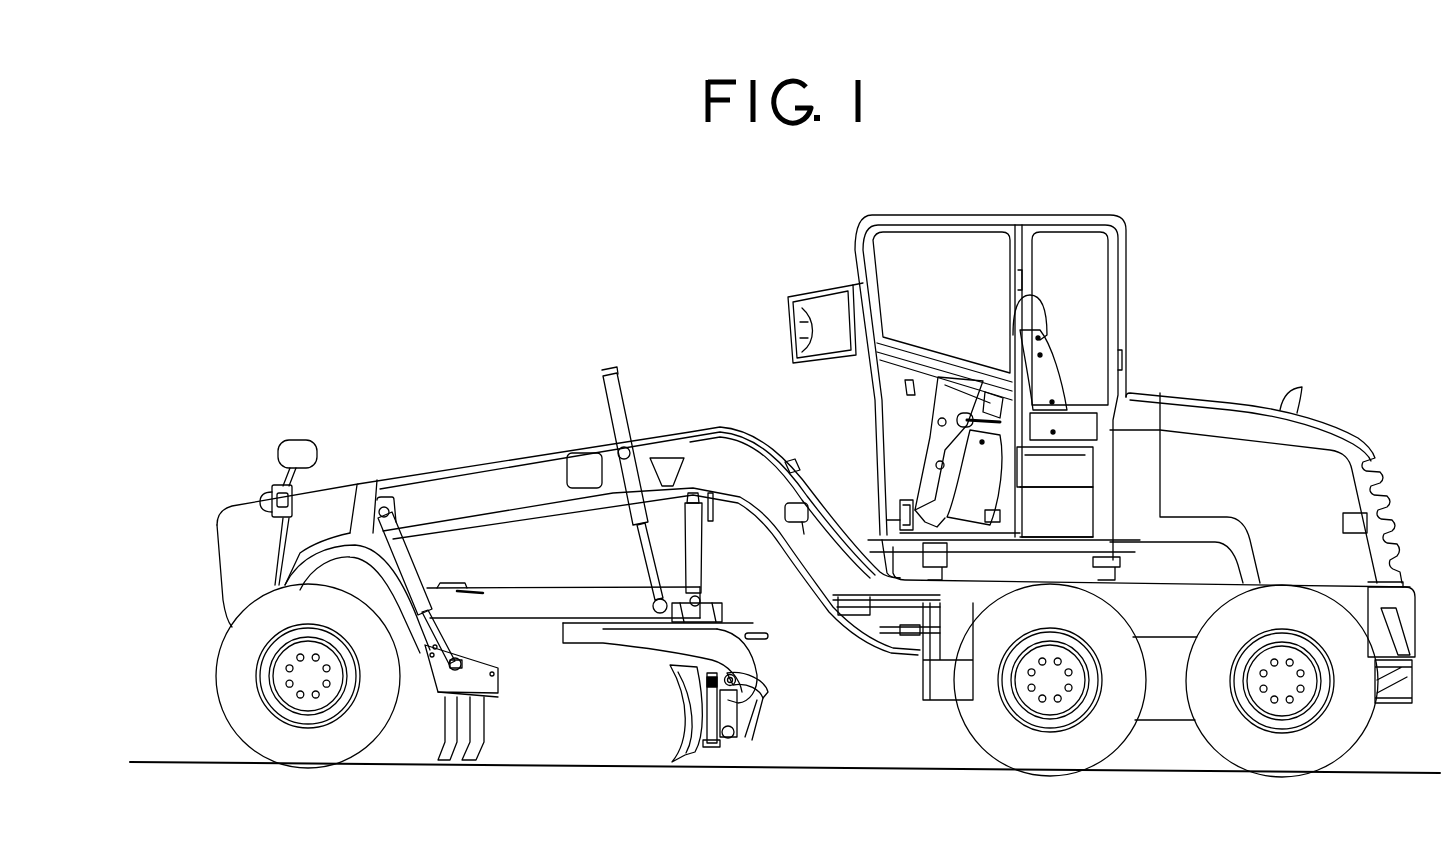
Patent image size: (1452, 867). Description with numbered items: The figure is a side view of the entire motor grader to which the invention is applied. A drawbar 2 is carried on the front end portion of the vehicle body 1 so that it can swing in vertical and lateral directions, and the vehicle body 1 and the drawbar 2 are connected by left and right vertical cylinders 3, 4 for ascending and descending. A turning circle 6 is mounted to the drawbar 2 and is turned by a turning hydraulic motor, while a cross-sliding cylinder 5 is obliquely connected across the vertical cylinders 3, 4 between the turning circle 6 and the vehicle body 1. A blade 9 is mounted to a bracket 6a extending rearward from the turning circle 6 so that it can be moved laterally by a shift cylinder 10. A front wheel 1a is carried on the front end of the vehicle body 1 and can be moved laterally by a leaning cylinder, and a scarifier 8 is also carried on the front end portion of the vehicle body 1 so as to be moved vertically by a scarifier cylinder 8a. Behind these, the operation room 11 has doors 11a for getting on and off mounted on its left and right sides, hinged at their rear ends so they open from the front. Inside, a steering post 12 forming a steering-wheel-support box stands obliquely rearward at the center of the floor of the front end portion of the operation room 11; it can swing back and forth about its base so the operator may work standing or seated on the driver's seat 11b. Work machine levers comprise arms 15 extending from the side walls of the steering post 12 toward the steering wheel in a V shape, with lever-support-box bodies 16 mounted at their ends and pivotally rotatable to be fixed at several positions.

The vehicle body 1 is at (719, 424).
The front wheel 1a is at (238, 652).
The drawbar 2 is at (537, 602).
The vertical cylinder 3 is at (632, 470).
The vertical cylinder 4 is at (600, 390).
The cross-sliding cylinder 5 is at (695, 560).
The turning circle 6 is at (582, 647).
The bracket 6a is at (747, 662).
The scarifier 8 is at (495, 722).
The scarifier cylinder 8a is at (414, 554).
The blade 9 is at (688, 731).
The shift cylinder 10 is at (733, 708).
The operation room 11 is at (1058, 212).
The door 11a is at (893, 350).
The driver's seat 11b is at (990, 515).
The steering post 12 is at (930, 448).
The arm 15 is at (967, 452).
The lever-support-box body 16 is at (1005, 398).